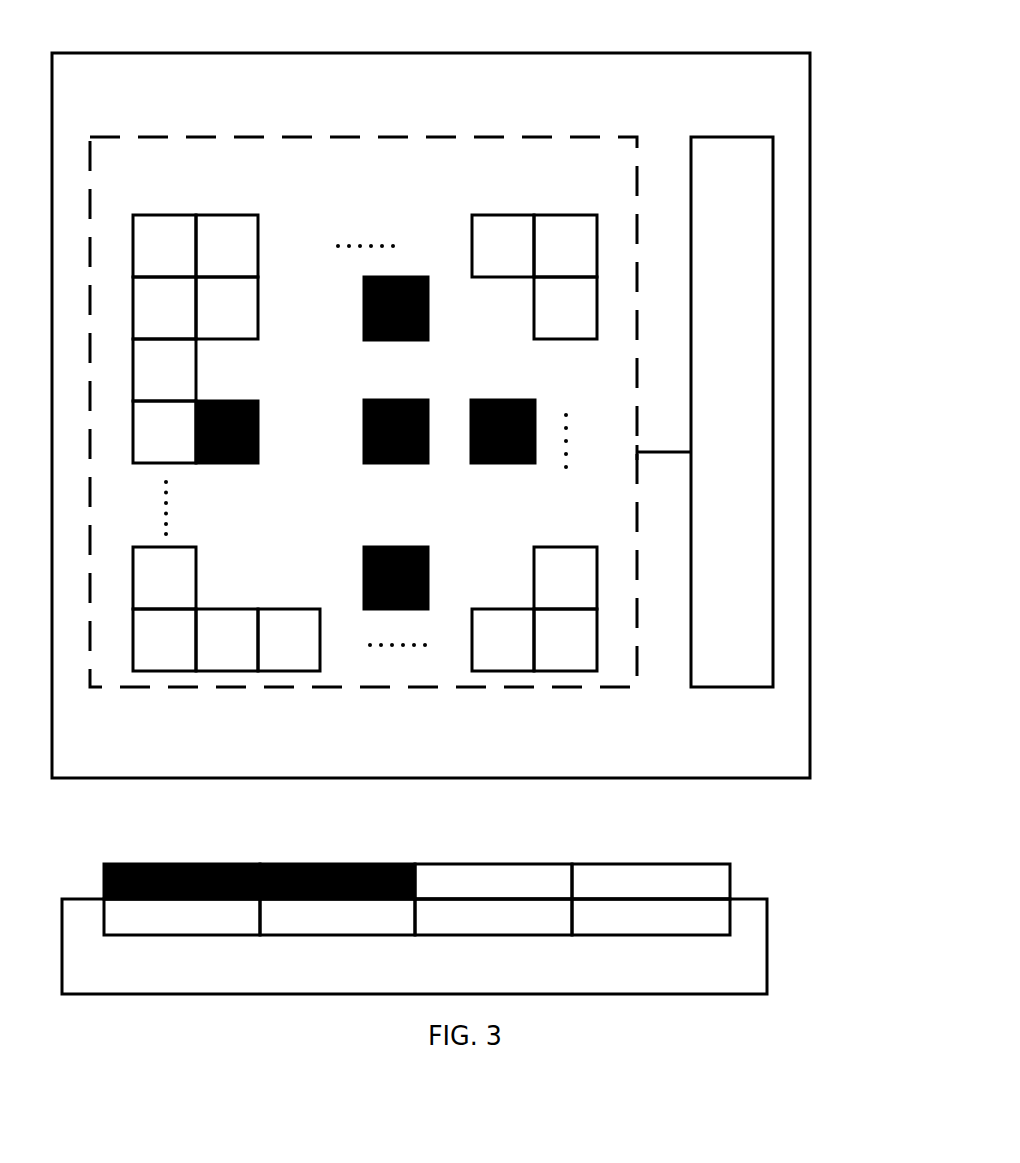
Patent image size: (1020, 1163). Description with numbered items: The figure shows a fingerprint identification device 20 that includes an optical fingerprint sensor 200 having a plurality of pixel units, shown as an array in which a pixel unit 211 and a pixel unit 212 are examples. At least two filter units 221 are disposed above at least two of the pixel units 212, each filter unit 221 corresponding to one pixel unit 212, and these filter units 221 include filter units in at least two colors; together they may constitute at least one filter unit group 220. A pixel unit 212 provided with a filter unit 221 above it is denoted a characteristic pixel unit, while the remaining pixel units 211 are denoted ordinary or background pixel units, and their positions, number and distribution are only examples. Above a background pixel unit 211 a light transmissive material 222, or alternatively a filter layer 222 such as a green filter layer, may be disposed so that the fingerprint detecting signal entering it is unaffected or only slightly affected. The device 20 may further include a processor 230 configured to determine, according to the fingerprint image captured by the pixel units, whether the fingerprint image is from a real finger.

The fingerprint identification device 20 is at (383, 48).
The optical fingerprint sensor 200 is at (515, 687).
The pixel unit (background pixel unit) 211 is at (165, 215).
The pixel unit (characteristic pixel unit) 212 is at (392, 463).
The filter unit group 220 is at (259, 844).
The filter unit 221 is at (320, 862).
The light transmissive material (filter layer) 222 is at (572, 882).
The processor 230 is at (705, 412).